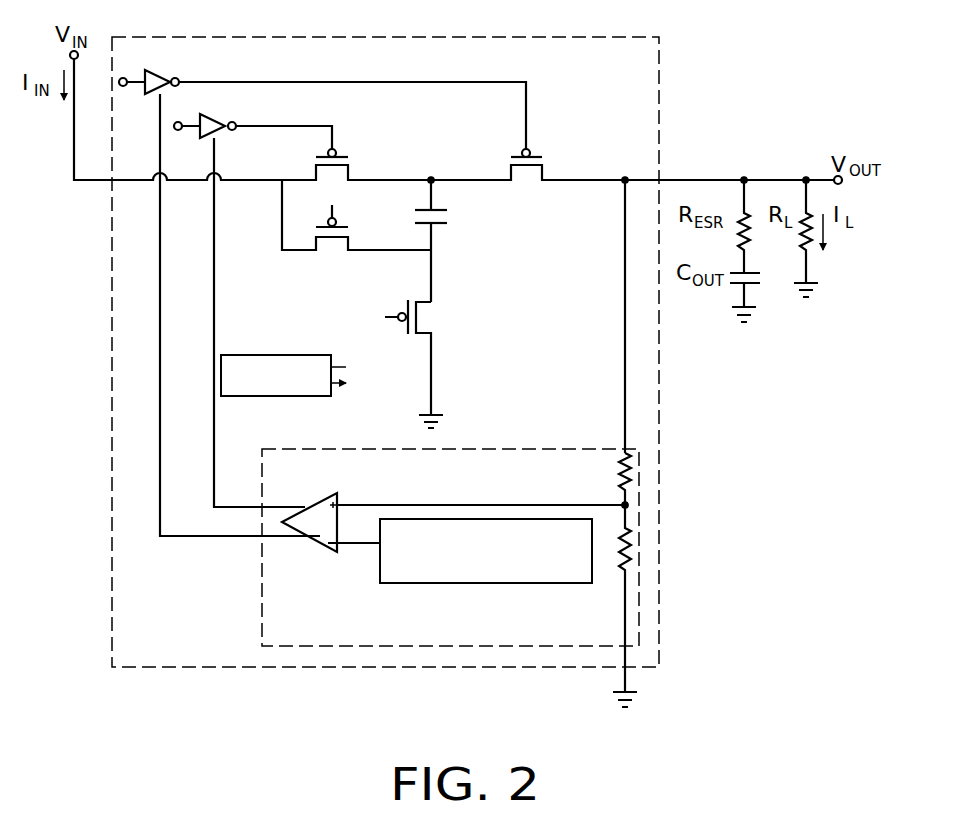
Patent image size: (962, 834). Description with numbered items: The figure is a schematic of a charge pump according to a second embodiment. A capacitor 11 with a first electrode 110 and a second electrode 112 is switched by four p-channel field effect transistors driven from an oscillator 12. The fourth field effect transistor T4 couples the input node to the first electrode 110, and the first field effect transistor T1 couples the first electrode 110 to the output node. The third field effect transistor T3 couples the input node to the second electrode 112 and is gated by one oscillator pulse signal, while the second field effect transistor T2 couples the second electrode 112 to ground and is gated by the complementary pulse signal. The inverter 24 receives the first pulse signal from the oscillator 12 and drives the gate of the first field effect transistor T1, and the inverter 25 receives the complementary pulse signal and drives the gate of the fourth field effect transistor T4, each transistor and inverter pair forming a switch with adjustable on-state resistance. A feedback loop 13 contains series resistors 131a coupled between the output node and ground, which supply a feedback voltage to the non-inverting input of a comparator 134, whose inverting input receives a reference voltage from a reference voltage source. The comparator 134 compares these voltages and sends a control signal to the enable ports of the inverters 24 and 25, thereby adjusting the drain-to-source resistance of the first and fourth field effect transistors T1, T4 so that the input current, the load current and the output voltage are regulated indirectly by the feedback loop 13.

The inverter 24 is at (166, 78).
The inverter 25 is at (221, 122).
The first field effect transistor T1 is at (531, 157).
The second field effect transistor T2 is at (408, 307).
The third field effect transistor T3 is at (340, 224).
The fourth field effect transistor T4 is at (340, 156).
The capacitor 11 is at (497, 241).
The first electrode 110 is at (449, 210).
The second electrode 112 is at (449, 225).
The oscillator 12 is at (232, 355).
The feedback loop 13 is at (450, 555).
The comparator 134 is at (318, 512).
The resistor 131a is at (620, 488).